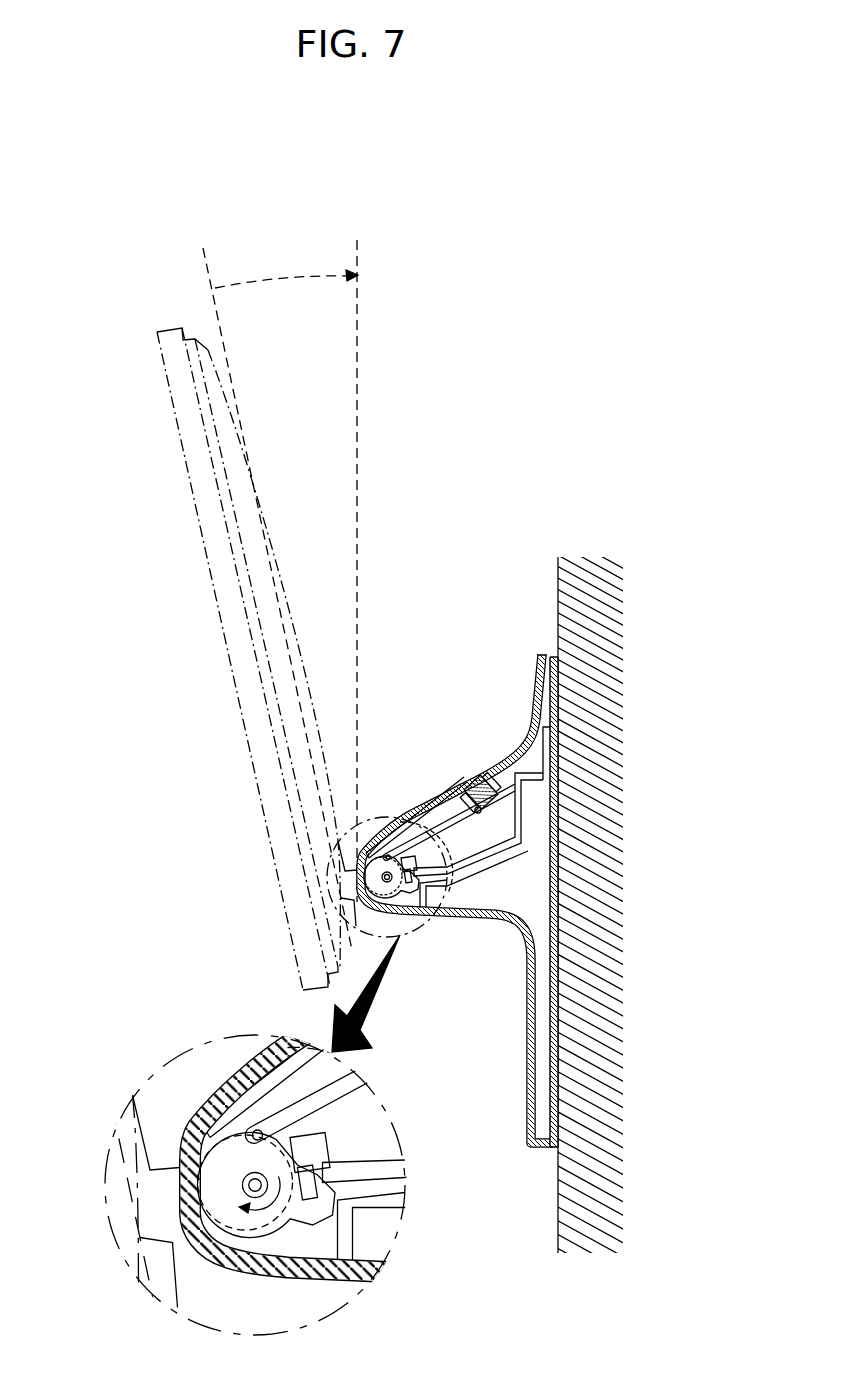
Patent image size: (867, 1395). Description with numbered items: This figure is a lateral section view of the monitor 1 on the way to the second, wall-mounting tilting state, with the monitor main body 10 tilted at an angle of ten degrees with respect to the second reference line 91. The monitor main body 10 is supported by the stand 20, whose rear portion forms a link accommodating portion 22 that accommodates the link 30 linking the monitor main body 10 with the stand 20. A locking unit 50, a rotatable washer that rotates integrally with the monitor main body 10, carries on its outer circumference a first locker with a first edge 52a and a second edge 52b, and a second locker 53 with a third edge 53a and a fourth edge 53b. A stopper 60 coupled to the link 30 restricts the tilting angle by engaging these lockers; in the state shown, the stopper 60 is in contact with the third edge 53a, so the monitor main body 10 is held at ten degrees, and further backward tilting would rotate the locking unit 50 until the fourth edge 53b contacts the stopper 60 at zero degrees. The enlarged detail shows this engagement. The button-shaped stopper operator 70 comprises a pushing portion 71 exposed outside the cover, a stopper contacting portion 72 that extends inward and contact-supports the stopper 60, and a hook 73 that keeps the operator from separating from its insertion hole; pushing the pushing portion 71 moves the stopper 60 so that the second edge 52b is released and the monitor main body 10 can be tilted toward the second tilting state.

The monitor 1 is at (122, 363).
The monitor main body 10 is at (220, 377).
The stand 20 is at (537, 1053).
The link accommodating portion 22 is at (410, 907).
The link 30 is at (510, 818).
The locking unit 50 is at (483, 1237).
The first edge 52a is at (380, 1262).
The second edge 52b is at (407, 1203).
The second locker 53 is at (448, 1110).
The third edge 53a is at (330, 1142).
The fourth edge 53b is at (275, 1138).
The stopper 60 is at (430, 822).
The stopper operator 70 is at (500, 722).
The pushing portion 71 is at (492, 772).
The stopper contacting portion 72 is at (463, 800).
The hook 73 is at (477, 778).
The second reference line 91 is at (291, 582).